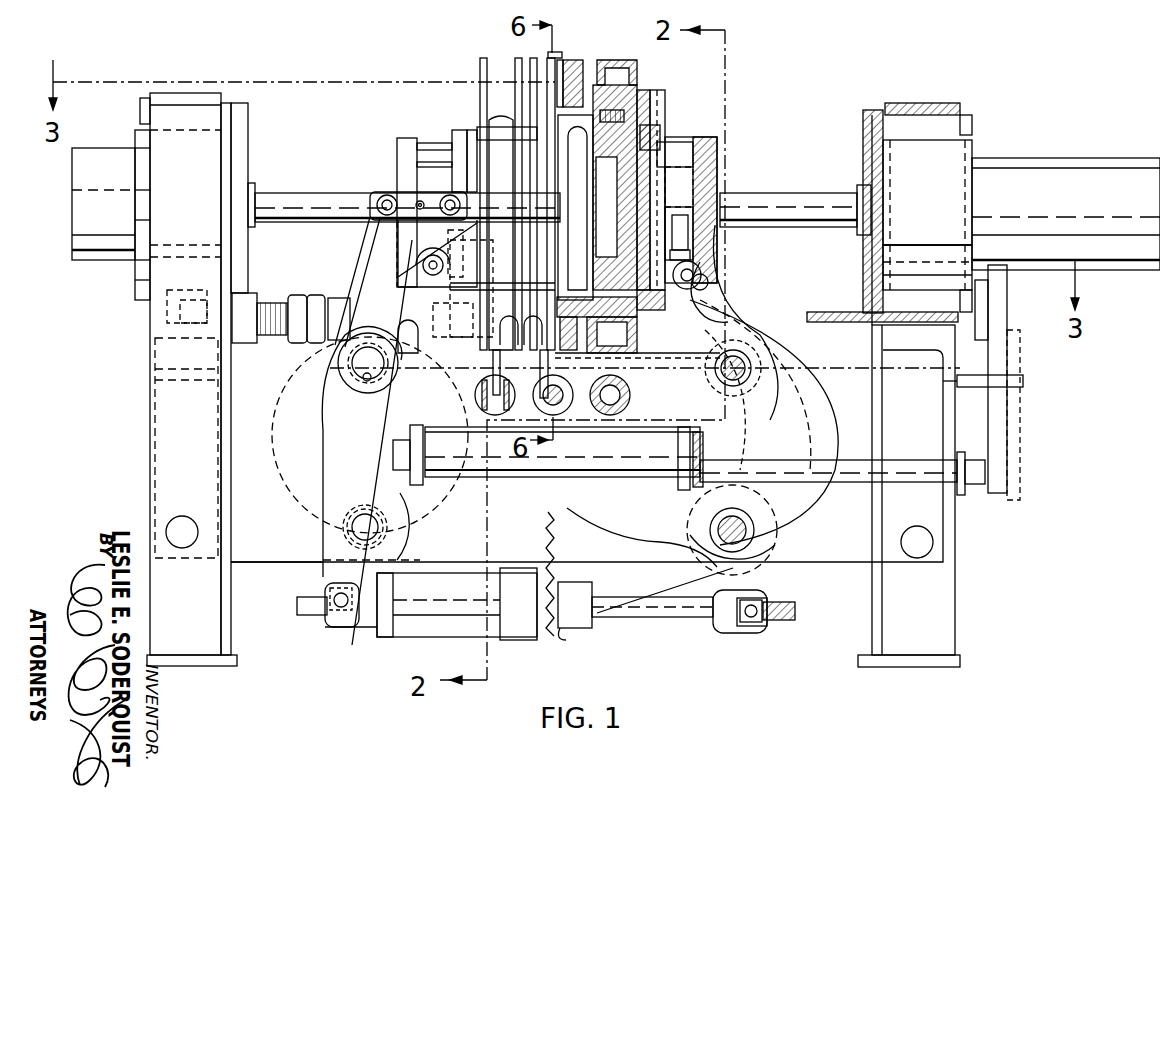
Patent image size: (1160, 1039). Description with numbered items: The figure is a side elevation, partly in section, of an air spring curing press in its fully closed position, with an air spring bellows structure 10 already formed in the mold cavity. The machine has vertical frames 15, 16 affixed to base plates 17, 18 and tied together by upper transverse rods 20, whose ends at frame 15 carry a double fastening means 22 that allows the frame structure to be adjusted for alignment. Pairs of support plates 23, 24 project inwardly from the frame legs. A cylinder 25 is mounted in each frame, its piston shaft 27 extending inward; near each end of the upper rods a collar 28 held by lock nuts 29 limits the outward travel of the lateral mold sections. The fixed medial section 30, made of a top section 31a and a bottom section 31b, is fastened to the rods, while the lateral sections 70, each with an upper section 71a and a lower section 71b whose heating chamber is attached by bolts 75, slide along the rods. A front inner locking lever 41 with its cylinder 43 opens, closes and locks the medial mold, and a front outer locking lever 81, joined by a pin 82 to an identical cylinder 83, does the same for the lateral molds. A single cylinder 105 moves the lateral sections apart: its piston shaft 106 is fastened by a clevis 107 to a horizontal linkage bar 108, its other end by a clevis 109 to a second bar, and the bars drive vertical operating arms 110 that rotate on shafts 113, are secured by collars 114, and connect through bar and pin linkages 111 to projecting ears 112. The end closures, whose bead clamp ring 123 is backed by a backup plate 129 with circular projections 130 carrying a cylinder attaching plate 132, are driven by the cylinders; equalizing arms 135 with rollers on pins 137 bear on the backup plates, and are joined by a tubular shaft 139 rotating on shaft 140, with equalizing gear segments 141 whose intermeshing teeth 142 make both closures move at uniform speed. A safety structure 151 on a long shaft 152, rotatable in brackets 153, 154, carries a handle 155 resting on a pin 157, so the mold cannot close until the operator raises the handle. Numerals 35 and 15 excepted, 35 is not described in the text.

The air spring bellows structure 10 is at (574, 136).
The vertical frame 15 is at (208, 590).
The vertical frame 16 is at (945, 593).
The base plate 17 is at (212, 664).
The base plate 18 is at (860, 660).
The upper transverse rods 20 is at (283, 303).
The double fastening means 22 is at (185, 300).
The support plate 23 is at (256, 550).
The support plate 24 is at (808, 339).
The cylinder 25 is at (100, 165).
The piston shaft 27 is at (278, 200).
The collar 28 is at (333, 292).
The lock nuts 29 is at (318, 297).
The medial section 30 is at (580, 60).
The top section 31a is at (615, 78).
The bottom section 31b is at (612, 335).
The cap 35 is at (562, 52).
The front inner locking lever 41 is at (540, 368).
The cylinder 43 is at (560, 397).
The lateral section 70 is at (500, 64).
The upper section 71a is at (622, 98).
The lower section 71b is at (636, 308).
The bolts 75 is at (626, 112).
The front outer locking lever 81 is at (493, 368).
The pin 82 is at (483, 402).
The cylinder 83 is at (630, 395).
The cylinder 105 is at (432, 626).
The piston shaft 106 is at (672, 614).
The clevis 107 is at (741, 632).
The horizontal linkage bar 108 is at (795, 611).
The clevis 109 is at (358, 622).
The vertical operating arm 110 is at (328, 554).
The bar and pin linkage 111 is at (384, 196).
The projecting ears 112 is at (444, 194).
The shaft 113 is at (385, 372).
The collar 114 is at (371, 380).
The bead clamp ring 123 is at (650, 128).
The backup plate 129 is at (650, 150).
The circular projections 130 is at (675, 150).
The cylinder attaching plate 132 is at (408, 145).
The equalizing arms 135 is at (272, 428).
The pin 137 is at (700, 285).
The horizontal tubular shaft 139 is at (745, 520).
The shaft 140 is at (718, 527).
The equalizing gear segment 141 is at (620, 619).
The intermeshing teeth 142 is at (556, 518).
The L-shaped rectangular structure 151 is at (642, 458).
The long shaft 152 is at (534, 474).
The bracket 153 is at (423, 480).
The bracket 154 is at (688, 490).
The handle 155 is at (997, 413).
The pin 157 is at (1023, 381).